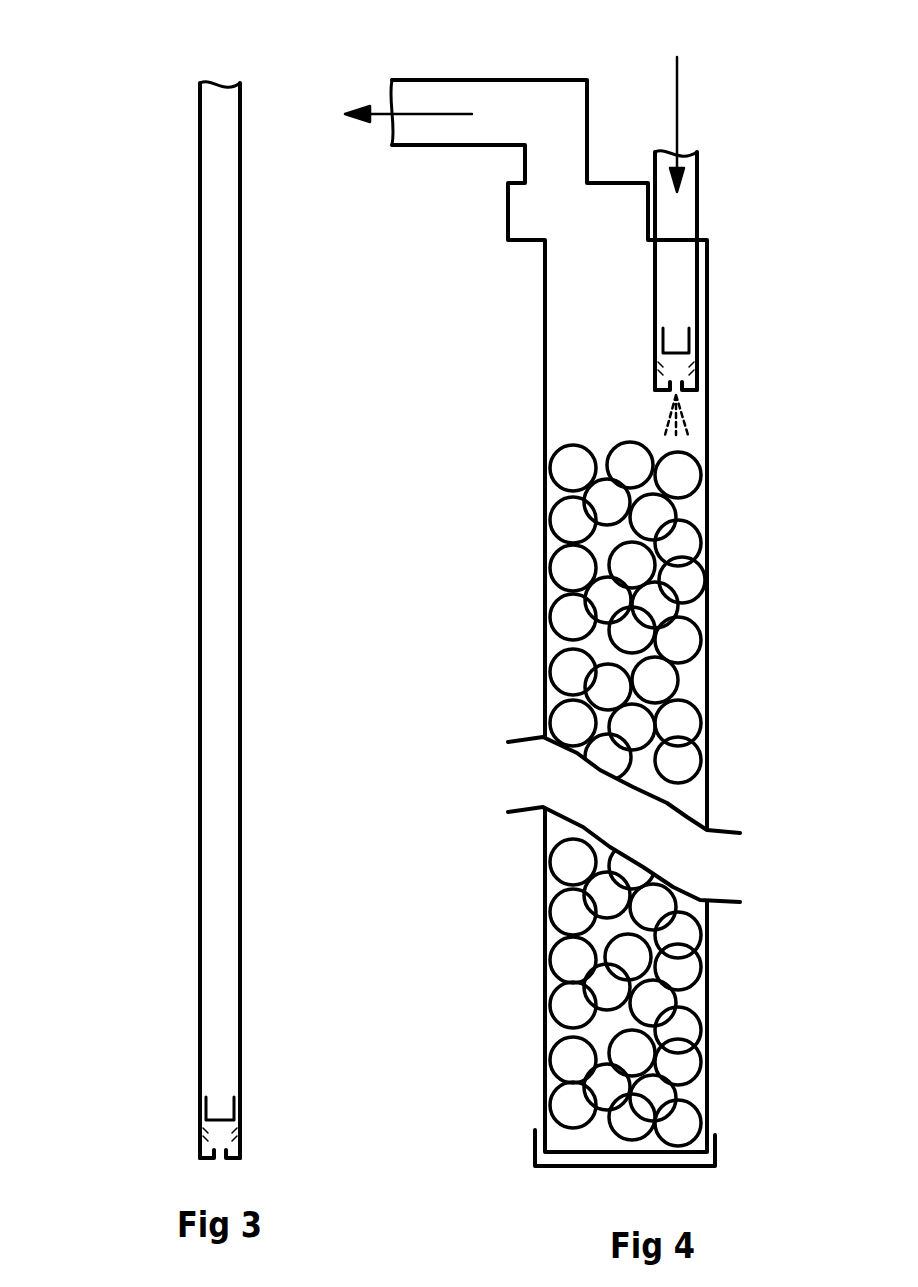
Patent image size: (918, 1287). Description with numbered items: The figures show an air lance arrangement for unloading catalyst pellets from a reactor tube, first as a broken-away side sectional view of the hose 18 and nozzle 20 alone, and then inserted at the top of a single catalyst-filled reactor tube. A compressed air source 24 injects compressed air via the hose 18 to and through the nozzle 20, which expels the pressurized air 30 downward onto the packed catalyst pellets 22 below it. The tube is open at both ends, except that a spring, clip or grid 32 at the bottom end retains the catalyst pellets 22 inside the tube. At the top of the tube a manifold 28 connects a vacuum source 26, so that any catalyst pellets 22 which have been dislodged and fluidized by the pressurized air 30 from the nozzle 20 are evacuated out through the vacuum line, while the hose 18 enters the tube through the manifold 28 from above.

In FIG. 3, the hose 18 is at (200, 165).
In FIG. 4, the hose 18 is at (698, 203).
In FIG. 3, the nozzle 20 is at (242, 1133).
In FIG. 4, the nozzle 20 is at (697, 377).
In FIG. 4, the catalyst pellets 22 is at (695, 638).
In FIG. 4, the compressed air source 24 is at (677, 98).
In FIG. 4, the vacuum source 26 is at (385, 112).
In FIG. 4, the manifold 28 is at (600, 202).
In FIG. 4, the pressurized air 30 is at (687, 418).
In FIG. 4, the spring, clip or grid 32 is at (700, 1167).